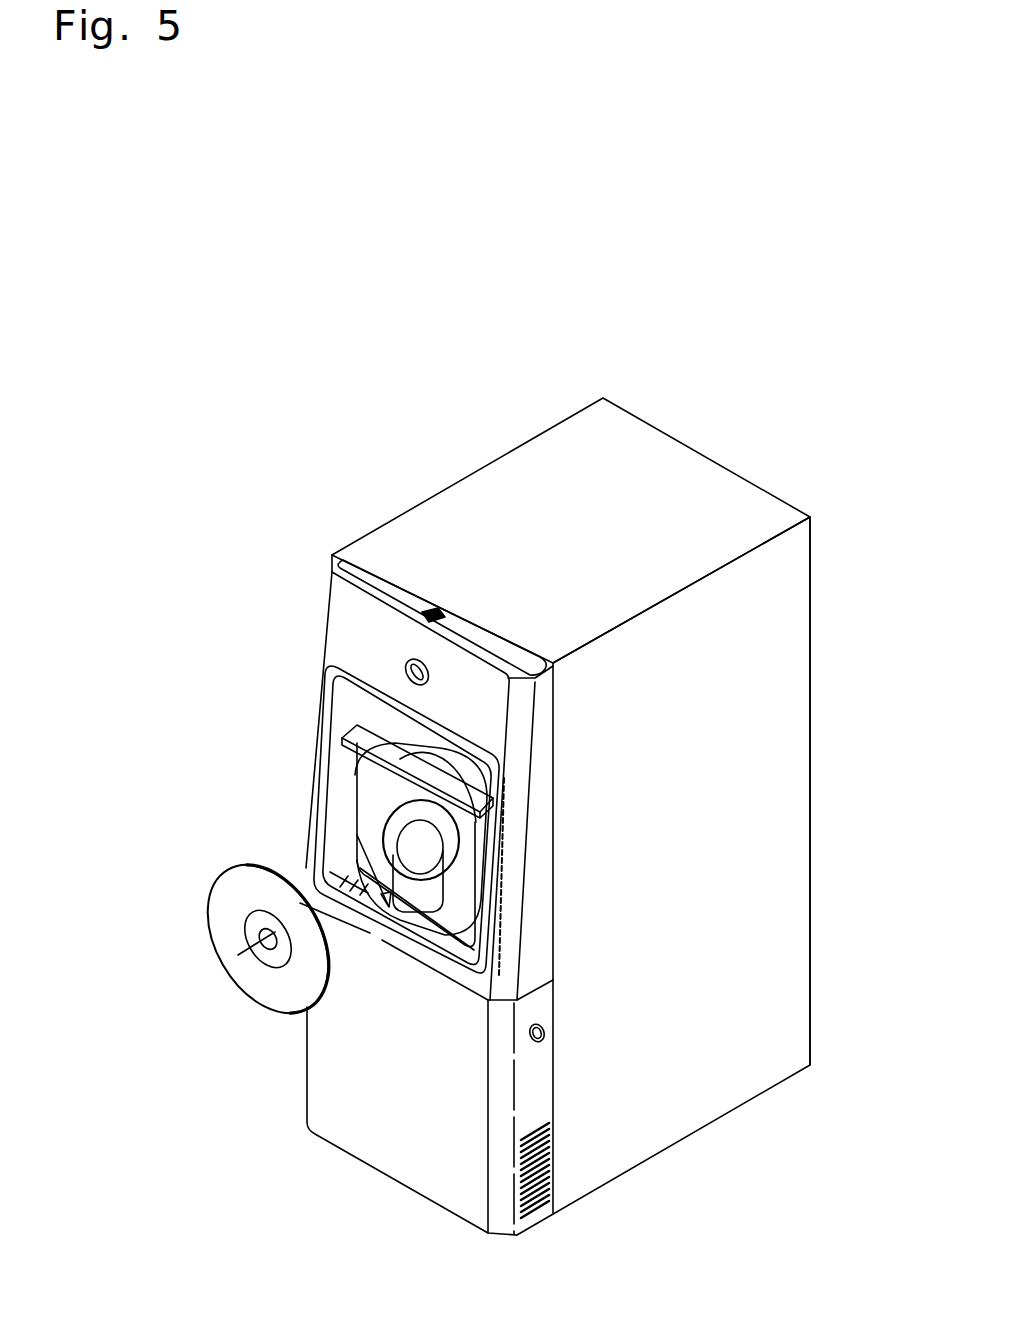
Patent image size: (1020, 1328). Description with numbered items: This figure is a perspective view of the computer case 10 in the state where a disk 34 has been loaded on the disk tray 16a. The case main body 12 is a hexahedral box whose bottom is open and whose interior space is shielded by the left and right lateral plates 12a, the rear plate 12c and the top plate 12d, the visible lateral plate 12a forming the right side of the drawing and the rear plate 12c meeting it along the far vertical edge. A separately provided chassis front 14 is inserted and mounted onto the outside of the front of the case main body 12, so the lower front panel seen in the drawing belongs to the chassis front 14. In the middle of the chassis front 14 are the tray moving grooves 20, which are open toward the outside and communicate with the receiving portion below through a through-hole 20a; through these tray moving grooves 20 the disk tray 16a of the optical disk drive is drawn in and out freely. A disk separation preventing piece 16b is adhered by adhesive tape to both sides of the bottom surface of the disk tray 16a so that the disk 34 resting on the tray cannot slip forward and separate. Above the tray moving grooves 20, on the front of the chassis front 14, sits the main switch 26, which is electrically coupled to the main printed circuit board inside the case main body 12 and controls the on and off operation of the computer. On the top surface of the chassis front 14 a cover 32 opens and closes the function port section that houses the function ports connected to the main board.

The laundry treating apparatus 10 is at (252, 421).
The case main body 12 is at (818, 1000).
The lateral plate 12a is at (740, 868).
The rear plate 12c is at (812, 663).
The top plate 12d is at (450, 510).
The chassis front 14 is at (395, 1105).
The disk tray 16a is at (380, 787).
The disk separation preventing piece 16b is at (452, 932).
The tray moving groove 20 is at (370, 717).
The through-hole 20a is at (418, 852).
The main switch 26 is at (341, 647).
The cover 32 is at (369, 567).
The disk 34 is at (275, 987).